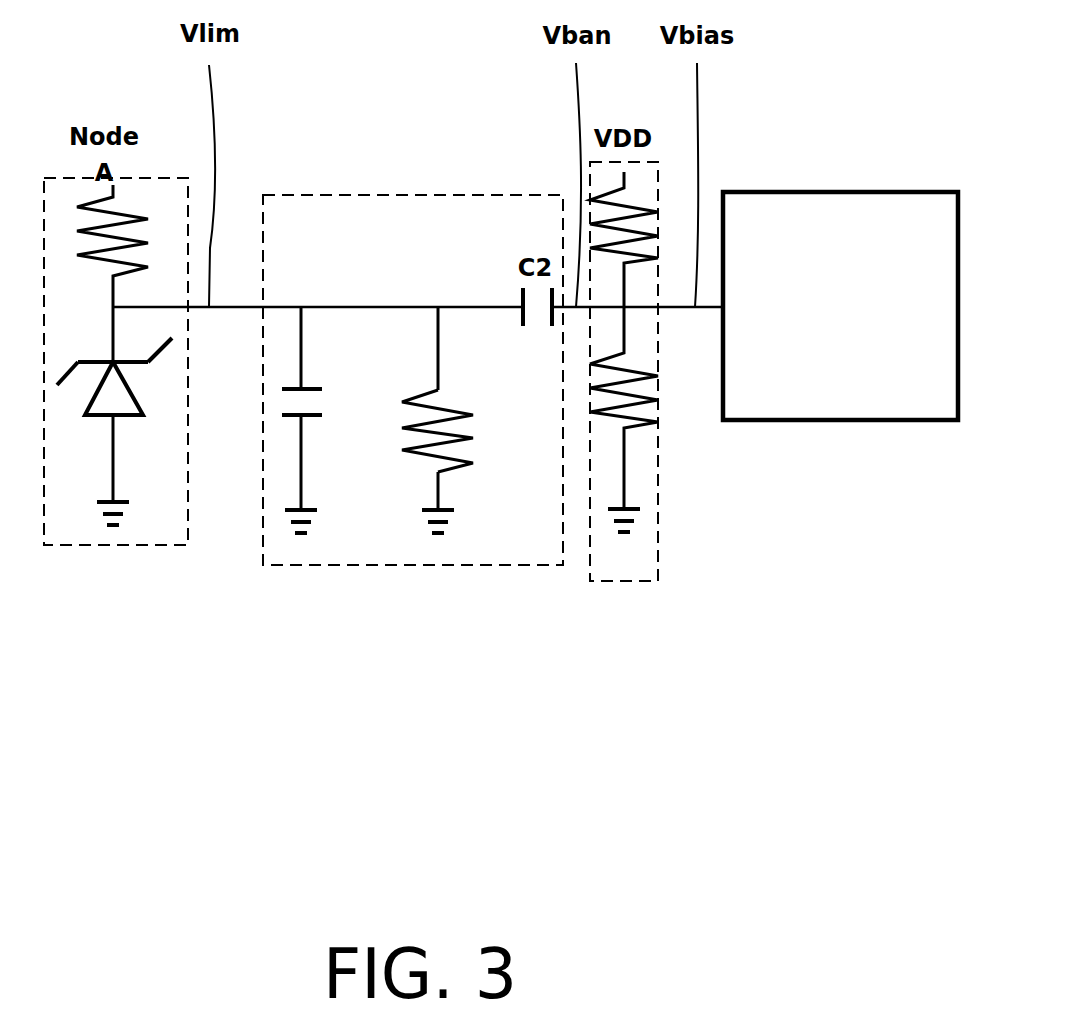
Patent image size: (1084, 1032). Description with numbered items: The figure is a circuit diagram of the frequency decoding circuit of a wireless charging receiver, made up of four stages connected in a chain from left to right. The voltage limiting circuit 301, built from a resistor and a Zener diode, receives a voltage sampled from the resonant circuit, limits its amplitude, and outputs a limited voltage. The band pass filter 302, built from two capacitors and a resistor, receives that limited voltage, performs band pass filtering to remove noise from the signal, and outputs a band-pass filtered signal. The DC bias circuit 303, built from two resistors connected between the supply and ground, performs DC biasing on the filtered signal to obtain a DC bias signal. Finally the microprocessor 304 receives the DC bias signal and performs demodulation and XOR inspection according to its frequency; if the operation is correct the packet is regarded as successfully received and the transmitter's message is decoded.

The voltage limiting circuit 301 is at (113, 545).
The band pass filter 302 is at (413, 565).
The DC bias circuit 303 is at (625, 582).
The microprocessor 304 is at (882, 420).